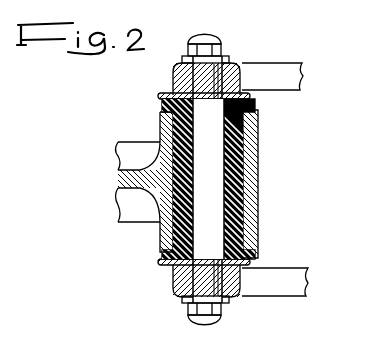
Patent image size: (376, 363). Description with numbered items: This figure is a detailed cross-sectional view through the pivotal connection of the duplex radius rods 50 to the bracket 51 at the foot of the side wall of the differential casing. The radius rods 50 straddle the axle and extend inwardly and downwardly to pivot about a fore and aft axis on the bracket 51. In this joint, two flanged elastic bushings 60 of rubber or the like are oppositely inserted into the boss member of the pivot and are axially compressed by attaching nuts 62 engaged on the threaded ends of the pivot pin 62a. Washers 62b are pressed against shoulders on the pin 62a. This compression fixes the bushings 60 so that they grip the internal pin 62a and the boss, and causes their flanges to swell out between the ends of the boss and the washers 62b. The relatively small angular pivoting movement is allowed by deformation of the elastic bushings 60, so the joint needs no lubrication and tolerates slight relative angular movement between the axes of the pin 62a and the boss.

The radius rods 50 is at (304, 78).
The bracket 51 is at (252, 172).
The flanged elastic bushings 60 is at (243, 150).
The attaching nuts 62 is at (221, 49).
The pivot pin 62a is at (224, 130).
The washers 62b is at (250, 96).